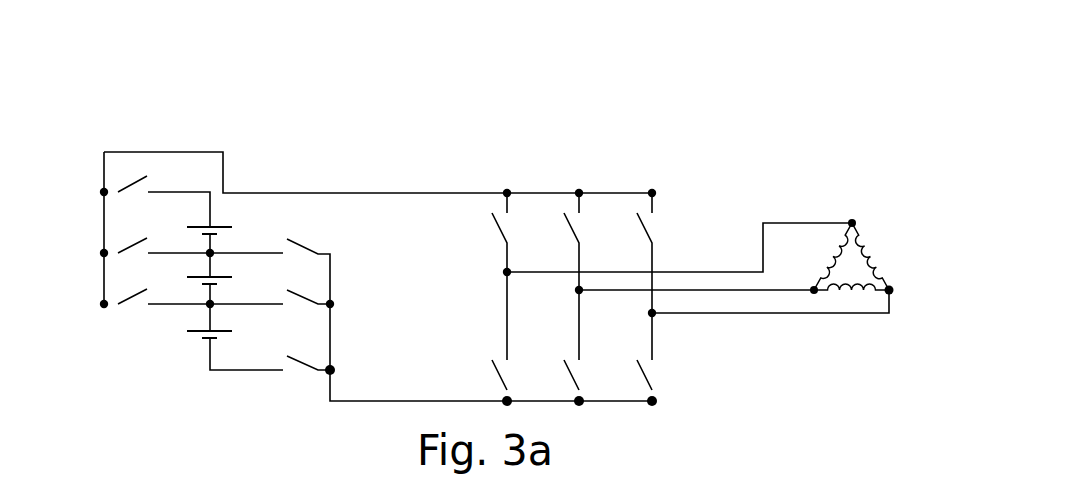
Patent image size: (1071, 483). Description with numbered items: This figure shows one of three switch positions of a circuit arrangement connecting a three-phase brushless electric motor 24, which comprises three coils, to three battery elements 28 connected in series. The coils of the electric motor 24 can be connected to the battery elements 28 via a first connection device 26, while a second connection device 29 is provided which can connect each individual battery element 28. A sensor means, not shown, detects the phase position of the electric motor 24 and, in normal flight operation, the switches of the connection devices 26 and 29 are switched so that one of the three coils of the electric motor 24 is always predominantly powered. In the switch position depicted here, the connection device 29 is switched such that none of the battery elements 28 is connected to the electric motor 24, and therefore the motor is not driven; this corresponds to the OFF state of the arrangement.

The three-phase brushless electric motor 24 is at (835, 188).
The first connection device 26 is at (582, 125).
The battery elements 28 is at (175, 322).
The second connection device 29 is at (176, 118).